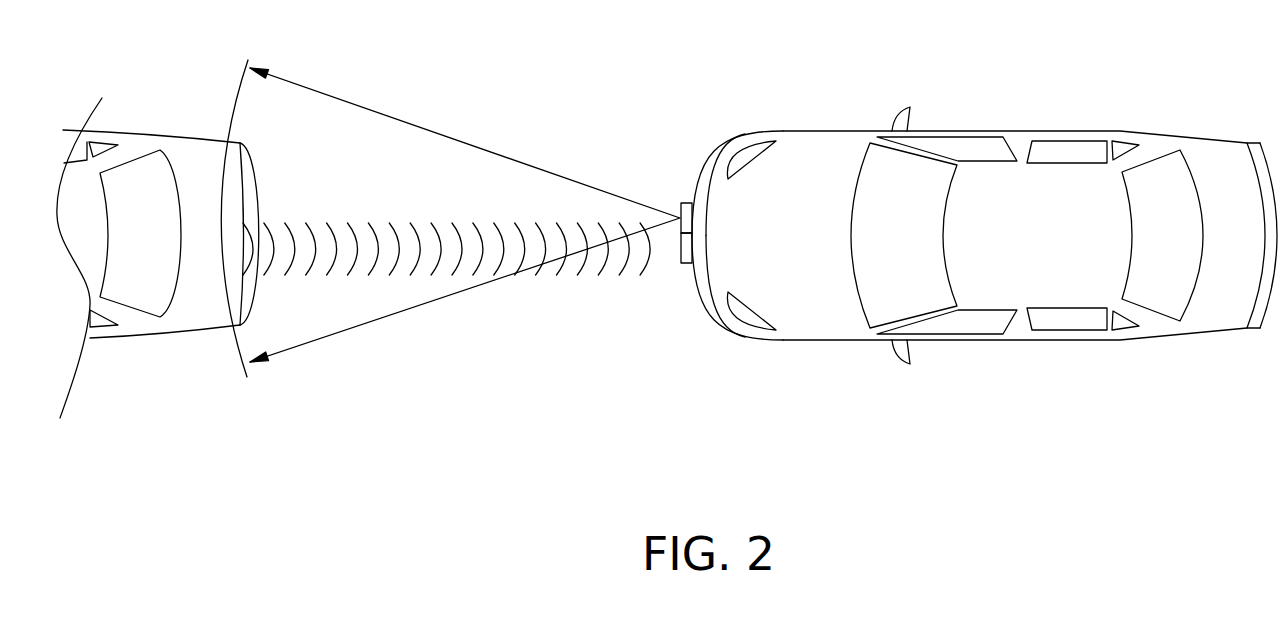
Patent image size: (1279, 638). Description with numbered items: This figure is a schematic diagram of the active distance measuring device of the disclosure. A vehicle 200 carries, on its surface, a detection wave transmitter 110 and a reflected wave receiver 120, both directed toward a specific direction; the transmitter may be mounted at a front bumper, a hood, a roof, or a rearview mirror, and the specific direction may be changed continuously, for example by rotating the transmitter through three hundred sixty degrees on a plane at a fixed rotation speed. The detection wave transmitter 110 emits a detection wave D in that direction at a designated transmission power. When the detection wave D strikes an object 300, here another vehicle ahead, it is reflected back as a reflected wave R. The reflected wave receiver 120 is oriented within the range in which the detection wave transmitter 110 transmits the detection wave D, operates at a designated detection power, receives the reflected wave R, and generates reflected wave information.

The vehicle 200 is at (1057, 131).
The object 300 is at (158, 133).
The detection wave transmitter 110 is at (688, 203).
The reflected wave receiver 120 is at (680, 260).
The detection wave D is at (475, 145).
The reflected wave R is at (562, 272).